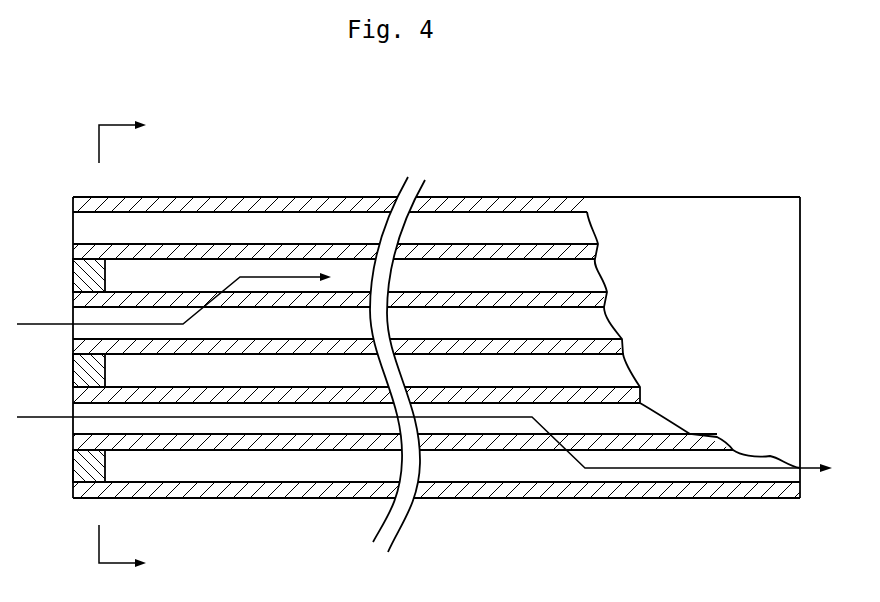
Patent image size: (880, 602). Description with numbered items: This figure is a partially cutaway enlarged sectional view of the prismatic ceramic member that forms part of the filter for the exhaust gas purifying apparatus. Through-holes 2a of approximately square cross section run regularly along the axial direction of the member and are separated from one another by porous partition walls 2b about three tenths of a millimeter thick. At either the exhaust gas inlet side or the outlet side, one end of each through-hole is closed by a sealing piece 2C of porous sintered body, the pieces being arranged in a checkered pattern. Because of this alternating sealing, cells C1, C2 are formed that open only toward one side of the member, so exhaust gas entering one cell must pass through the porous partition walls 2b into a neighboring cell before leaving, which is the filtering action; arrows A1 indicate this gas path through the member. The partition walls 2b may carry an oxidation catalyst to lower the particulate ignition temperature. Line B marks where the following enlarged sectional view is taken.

The through-holes 2a is at (243, 214).
The porous partition walls 2b is at (548, 292).
The sealing piece 2C is at (87, 243).
The signal conductor path A1 is at (40, 324).
The cell C1 is at (245, 434).
The cell C2 is at (547, 478).
The line B— B is at (130, 345).